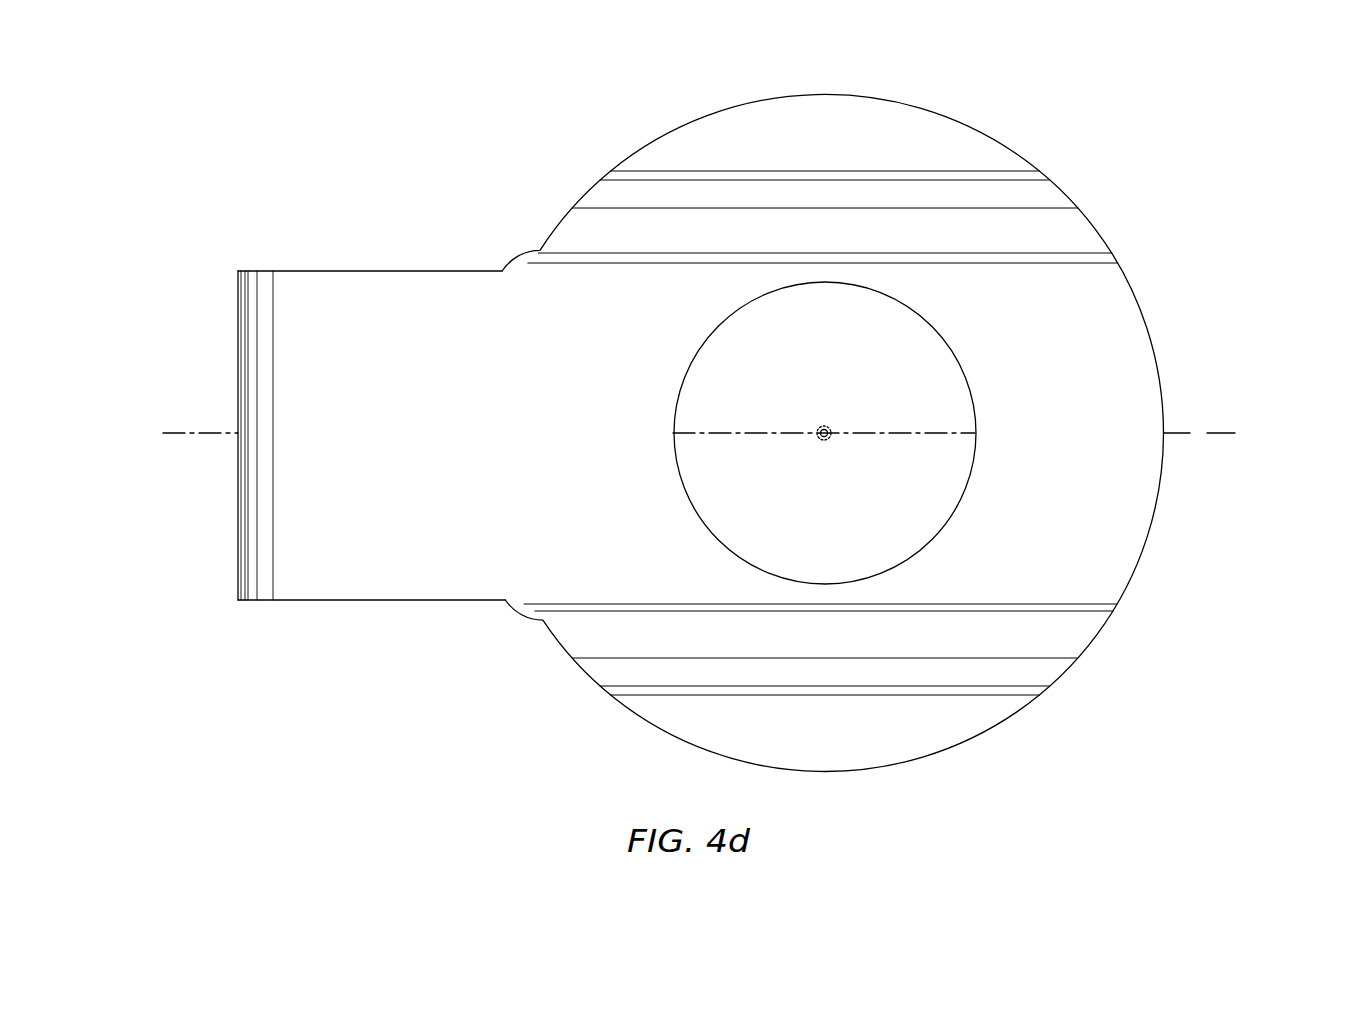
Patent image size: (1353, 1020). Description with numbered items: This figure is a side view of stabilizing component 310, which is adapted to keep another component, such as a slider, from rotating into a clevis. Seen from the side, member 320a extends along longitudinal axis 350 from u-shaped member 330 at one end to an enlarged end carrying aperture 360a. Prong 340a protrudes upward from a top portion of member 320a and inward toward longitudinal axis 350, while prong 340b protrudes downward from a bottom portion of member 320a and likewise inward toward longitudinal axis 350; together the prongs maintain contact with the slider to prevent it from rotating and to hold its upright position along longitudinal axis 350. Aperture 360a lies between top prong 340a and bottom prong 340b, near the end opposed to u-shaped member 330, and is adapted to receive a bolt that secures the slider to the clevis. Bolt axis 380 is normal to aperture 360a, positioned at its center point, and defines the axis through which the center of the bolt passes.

The stabilizing component 310 is at (230, 166).
The member 320a is at (528, 492).
The u-shaped member 330 is at (235, 506).
The prong 340a is at (665, 132).
The prong 340b is at (955, 747).
The longitudinal axis 350 is at (1193, 431).
The aperture 360a is at (903, 528).
The bolt axis 380 is at (816, 427).